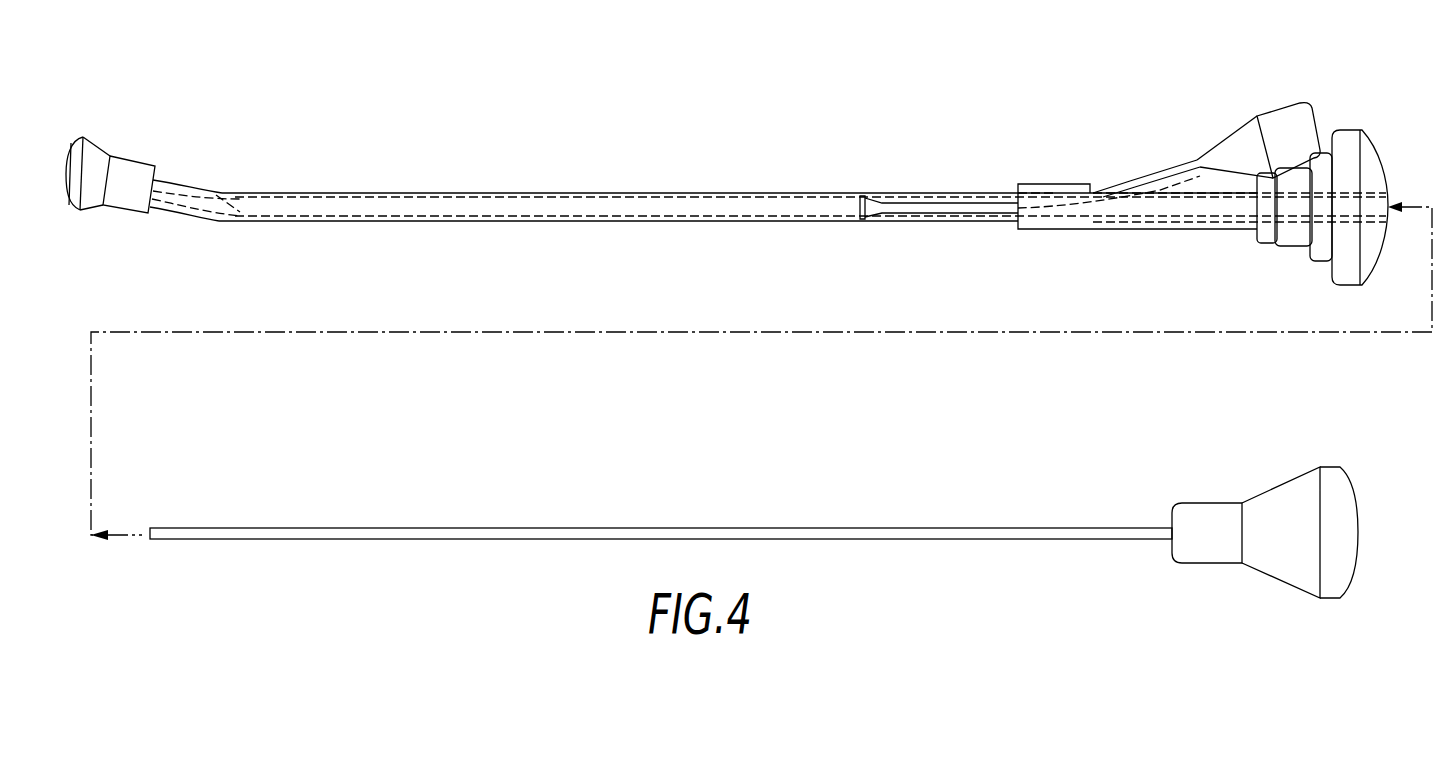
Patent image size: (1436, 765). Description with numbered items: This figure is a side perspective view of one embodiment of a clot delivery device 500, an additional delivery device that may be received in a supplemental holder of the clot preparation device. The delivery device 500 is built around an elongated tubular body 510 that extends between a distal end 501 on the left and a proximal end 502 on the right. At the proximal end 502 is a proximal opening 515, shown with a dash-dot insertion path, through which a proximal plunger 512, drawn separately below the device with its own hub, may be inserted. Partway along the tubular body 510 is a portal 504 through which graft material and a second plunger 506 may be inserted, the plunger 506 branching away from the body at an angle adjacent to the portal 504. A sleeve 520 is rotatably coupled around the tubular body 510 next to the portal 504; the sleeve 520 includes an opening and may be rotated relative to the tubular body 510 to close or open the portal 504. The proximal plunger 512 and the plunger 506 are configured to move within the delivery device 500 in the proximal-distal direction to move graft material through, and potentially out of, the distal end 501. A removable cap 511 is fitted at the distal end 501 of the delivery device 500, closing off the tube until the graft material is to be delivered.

The delivery device 500 is at (710, 178).
The distal end 501 is at (172, 212).
The proximal end 502 is at (1342, 130).
The portal 504 is at (1093, 186).
The plunger 506 is at (1175, 168).
The tubular body 510 is at (602, 223).
The cap 511 is at (86, 137).
The proximal plunger 512 is at (852, 527).
The proximal opening 515 is at (1388, 207).
The sleeve 520 is at (1037, 184).